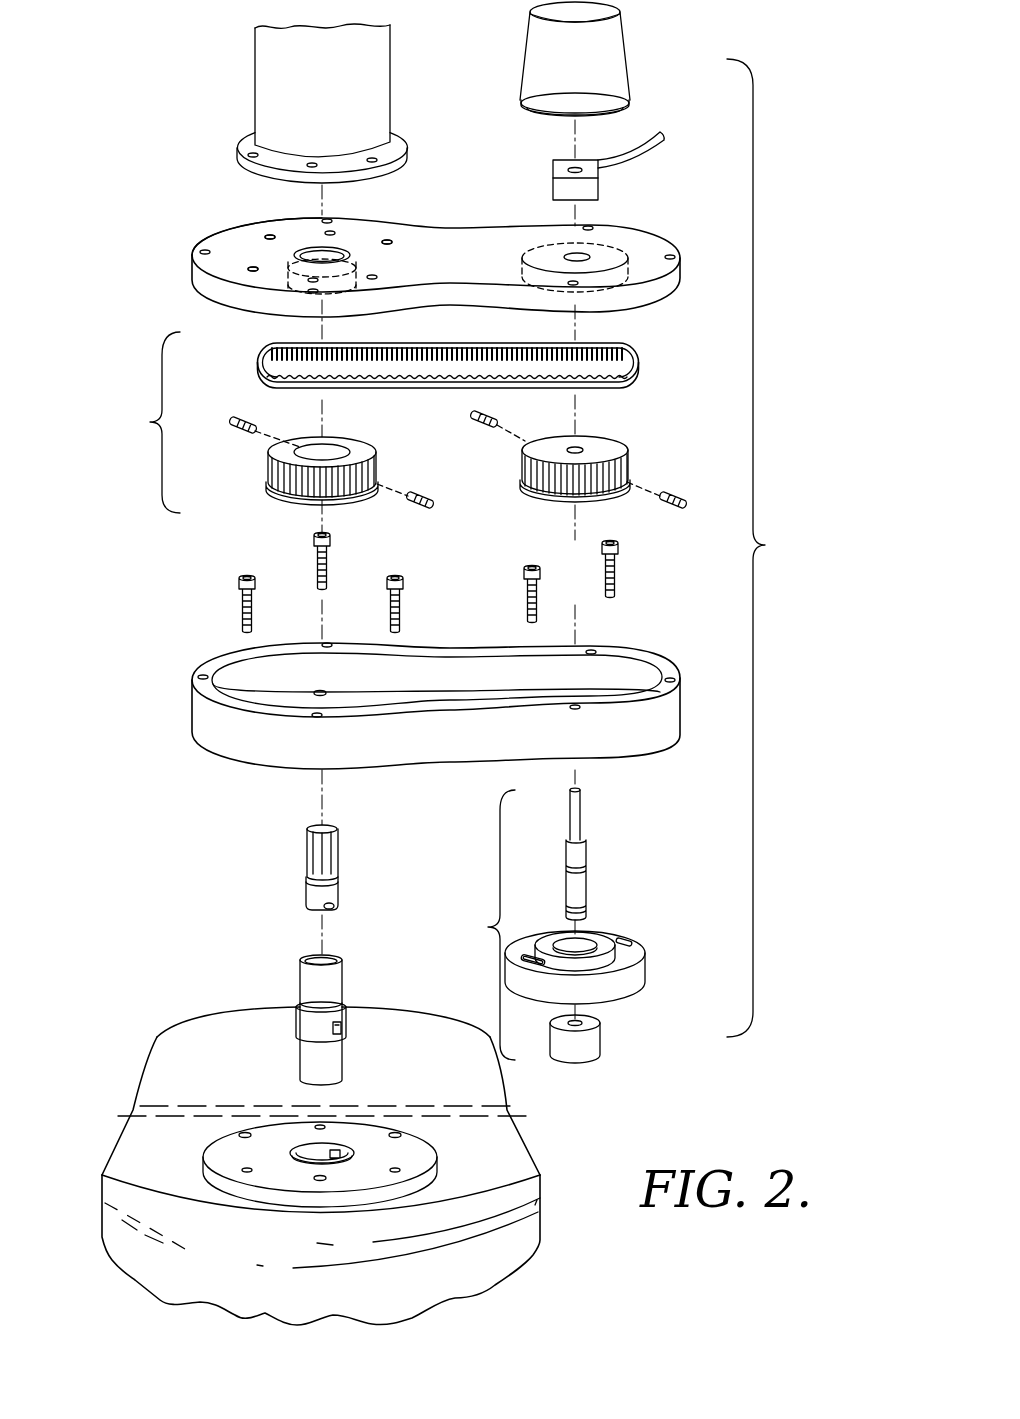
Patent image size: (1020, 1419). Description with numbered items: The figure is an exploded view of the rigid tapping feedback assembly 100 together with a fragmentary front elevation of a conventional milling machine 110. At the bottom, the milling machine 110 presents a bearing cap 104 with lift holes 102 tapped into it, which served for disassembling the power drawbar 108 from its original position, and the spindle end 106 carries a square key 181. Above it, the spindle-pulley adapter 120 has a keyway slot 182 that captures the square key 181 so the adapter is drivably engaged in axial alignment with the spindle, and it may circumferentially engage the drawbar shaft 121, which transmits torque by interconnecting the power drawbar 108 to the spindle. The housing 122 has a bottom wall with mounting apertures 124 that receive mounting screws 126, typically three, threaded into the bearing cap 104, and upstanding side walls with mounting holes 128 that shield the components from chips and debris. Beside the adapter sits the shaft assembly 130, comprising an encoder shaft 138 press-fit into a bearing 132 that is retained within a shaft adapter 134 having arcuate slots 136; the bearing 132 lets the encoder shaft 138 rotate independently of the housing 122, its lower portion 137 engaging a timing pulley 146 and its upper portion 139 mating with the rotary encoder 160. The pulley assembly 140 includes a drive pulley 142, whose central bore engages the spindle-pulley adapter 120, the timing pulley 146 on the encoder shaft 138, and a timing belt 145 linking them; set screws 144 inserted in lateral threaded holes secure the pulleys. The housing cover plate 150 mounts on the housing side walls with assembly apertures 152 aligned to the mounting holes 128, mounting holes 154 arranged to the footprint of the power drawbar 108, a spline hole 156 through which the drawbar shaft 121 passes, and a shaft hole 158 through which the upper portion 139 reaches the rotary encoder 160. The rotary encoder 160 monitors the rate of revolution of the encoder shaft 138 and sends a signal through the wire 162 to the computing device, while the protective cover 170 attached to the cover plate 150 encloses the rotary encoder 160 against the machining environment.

The rigid tapping feedback assembly 100 is at (771, 548).
The lift holes 102 is at (395, 1135).
The bearing cap 104 is at (438, 1158).
The spindle end 106 is at (310, 1150).
The power drawbar 108 is at (235, 83).
The conventional milling machine 110 is at (121, 1013).
The spindle-pulley adapter 120 is at (290, 1003).
The drawbar shaft 121 is at (305, 846).
The housing 122 is at (192, 706).
The mounting apertures 124 is at (320, 692).
The mounting screws 126 is at (313, 540).
The mounting holes 128 is at (591, 654).
The shaft assembly 130 is at (473, 925).
The bearing 132 is at (600, 1040).
The shaft adapter 134 is at (647, 975).
The arcuate slots 136 is at (628, 940).
The lower portion 137 is at (566, 880).
The encoder shaft 138 is at (587, 854).
The upper portion 139 is at (570, 812).
The pulley assembly 140 is at (139, 422).
The drive pulley 142 is at (285, 500).
The set screws 144 is at (238, 430).
The timing belt 145 is at (262, 368).
The timing pulley 146 is at (530, 500).
The housing cover plate 150 is at (192, 283).
The assembly apertures 152 is at (200, 252).
The mounting holes 154 is at (385, 240).
The spline hole 156 is at (366, 276).
The shaft hole 158 is at (522, 277).
The rotary encoder 160 is at (553, 181).
The wire 162 is at (662, 148).
The protective cover 170 is at (627, 43).
The square key 181 is at (340, 1152).
The keyway slot 182 is at (341, 1028).